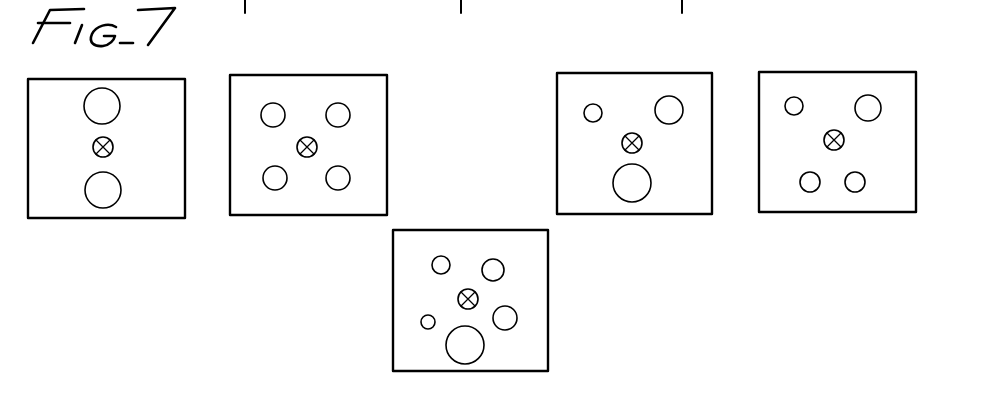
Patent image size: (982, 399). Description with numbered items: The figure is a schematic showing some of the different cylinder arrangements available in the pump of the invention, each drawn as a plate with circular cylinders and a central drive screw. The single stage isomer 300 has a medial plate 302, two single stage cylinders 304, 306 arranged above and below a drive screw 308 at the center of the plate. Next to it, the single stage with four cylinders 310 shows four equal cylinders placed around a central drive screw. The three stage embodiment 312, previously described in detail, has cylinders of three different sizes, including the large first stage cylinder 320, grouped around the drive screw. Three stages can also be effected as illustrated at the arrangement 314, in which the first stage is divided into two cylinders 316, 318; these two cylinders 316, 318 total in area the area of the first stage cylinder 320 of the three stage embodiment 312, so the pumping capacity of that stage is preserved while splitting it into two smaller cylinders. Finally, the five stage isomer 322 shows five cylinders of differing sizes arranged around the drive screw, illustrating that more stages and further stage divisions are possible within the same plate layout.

The single stage isomer 300 is at (43, 152).
The medial plate 302 is at (67, 198).
The single stage cylinder 304 is at (115, 207).
The single stage cylinder 306 is at (122, 102).
The drive screw 308 is at (115, 148).
The single stage with four cylinders 310 is at (298, 218).
The three stage embodiment 312 is at (570, 145).
The three stage arrangement with divided first stage 314 is at (891, 133).
The first stage cylinder 316 is at (810, 193).
The first stage cylinder 318 is at (855, 193).
The first stage cylinder 320 is at (647, 198).
The five stage isomer 322 is at (538, 319).